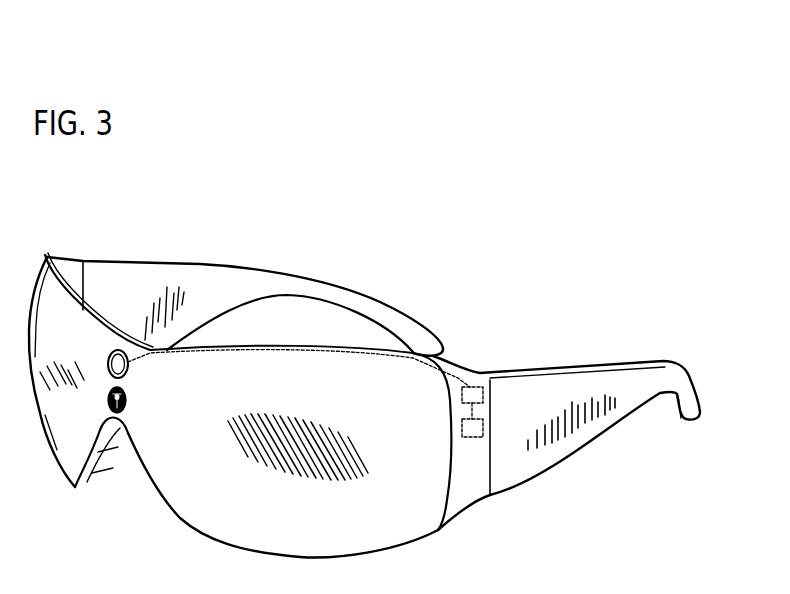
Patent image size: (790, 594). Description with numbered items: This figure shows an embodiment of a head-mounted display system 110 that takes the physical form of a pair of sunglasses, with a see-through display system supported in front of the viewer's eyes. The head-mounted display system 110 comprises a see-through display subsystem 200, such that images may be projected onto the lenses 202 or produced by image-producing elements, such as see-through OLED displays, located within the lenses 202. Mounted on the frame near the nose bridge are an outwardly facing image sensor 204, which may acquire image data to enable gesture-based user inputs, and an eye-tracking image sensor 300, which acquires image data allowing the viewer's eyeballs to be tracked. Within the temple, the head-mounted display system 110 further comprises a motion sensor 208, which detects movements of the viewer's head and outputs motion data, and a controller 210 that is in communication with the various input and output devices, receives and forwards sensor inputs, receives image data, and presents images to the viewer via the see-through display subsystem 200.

The head-mounted display system 110 is at (392, 197).
The eye-tracking image sensor 300 is at (56, 284).
The lenses 202 is at (383, 533).
The image sensor 204 is at (136, 368).
The see-through display subsystem 200 is at (134, 407).
The controller 210 is at (472, 386).
The motion sensor 208 is at (470, 437).